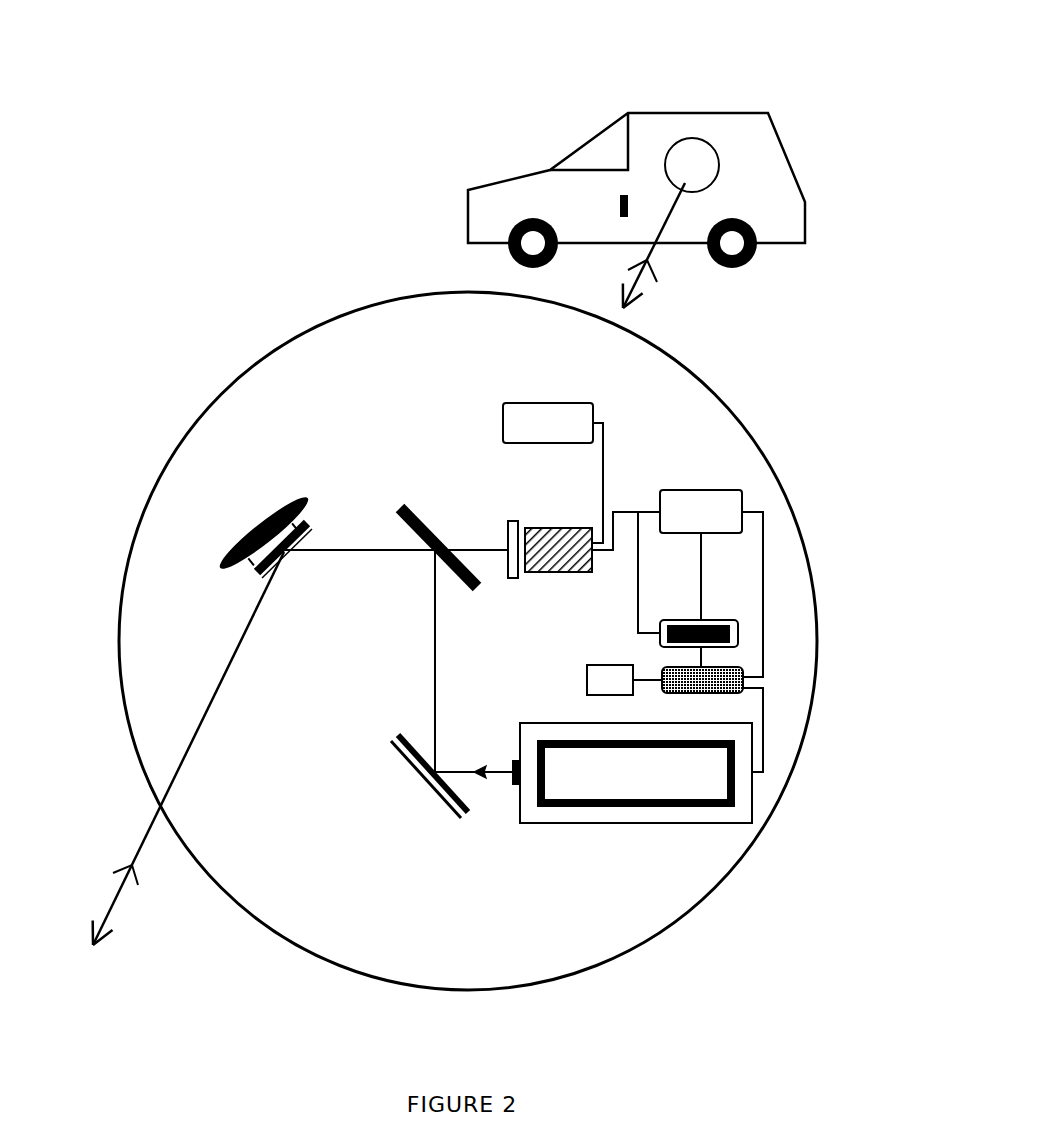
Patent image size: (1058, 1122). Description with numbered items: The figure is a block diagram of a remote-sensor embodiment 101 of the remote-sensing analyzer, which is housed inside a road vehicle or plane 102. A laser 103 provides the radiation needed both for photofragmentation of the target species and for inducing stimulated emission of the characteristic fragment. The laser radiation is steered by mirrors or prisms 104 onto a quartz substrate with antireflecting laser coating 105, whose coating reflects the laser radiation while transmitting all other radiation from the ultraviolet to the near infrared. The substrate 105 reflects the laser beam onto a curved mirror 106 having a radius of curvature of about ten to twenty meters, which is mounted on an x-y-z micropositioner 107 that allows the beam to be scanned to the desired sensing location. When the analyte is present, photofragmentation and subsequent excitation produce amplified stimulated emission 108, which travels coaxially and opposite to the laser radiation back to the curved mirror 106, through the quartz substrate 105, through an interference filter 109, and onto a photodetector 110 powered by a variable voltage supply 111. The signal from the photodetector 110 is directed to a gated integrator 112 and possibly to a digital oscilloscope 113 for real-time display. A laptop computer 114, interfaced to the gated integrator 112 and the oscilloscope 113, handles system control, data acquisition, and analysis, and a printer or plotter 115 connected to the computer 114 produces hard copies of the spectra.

The remote-sensor embodiment 101 is at (268, 317).
The road vehicle or plane 102 is at (805, 132).
The laser 103 is at (632, 773).
The mirrors or prisms 104 is at (425, 797).
The quartz substrate with antireflecting laser coating 105 is at (441, 535).
The curved mirror 106 is at (288, 565).
The x-y-z micropositioner 107 is at (252, 530).
The amplified stimulated emission 108 is at (392, 564).
The interference filter 109 is at (518, 583).
The photodetector 110 is at (558, 536).
The variable voltage supply 111 is at (548, 423).
The gated integrator 112 is at (701, 511).
The digital oscilloscope 113 is at (708, 619).
The laptop computer 114 is at (702, 694).
The printer or plotter 115 is at (610, 680).